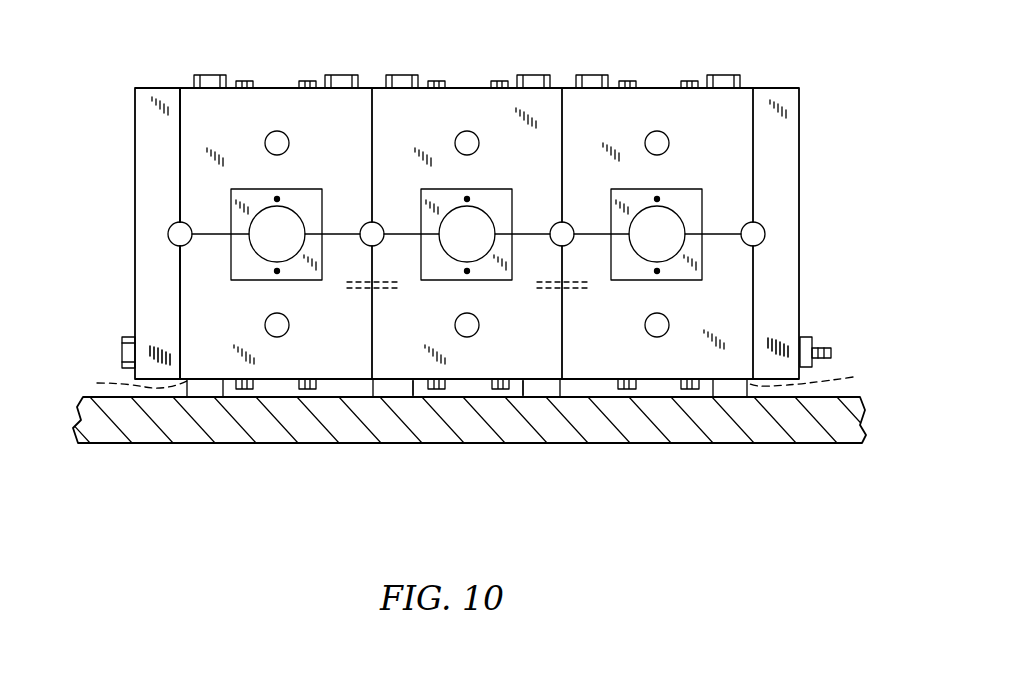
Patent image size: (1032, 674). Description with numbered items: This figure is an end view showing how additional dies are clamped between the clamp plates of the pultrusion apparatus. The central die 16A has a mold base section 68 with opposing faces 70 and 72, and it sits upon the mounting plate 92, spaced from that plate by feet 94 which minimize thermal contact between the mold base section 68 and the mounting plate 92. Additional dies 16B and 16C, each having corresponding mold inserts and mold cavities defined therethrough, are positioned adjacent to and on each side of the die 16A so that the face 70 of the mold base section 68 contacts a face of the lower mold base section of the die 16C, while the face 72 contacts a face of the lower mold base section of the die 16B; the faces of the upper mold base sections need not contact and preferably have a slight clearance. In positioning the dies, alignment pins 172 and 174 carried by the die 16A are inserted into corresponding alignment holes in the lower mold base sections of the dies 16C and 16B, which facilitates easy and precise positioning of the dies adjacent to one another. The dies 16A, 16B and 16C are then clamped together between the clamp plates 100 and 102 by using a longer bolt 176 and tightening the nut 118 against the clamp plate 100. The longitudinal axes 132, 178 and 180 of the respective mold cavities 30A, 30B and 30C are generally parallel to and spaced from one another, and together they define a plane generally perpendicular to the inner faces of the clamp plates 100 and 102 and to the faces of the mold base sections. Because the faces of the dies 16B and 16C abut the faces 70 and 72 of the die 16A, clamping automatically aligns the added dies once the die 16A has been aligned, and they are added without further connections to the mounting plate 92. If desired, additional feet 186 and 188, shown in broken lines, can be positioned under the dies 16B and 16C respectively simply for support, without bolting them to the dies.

The die 16A is at (467, 199).
The die 16B is at (276, 199).
The die 16C is at (657, 199).
The mold cavity 30A is at (466, 242).
The mold cavity 30B is at (276, 242).
The mold cavity 30C is at (655, 242).
The mold base section 68 is at (468, 372).
The face 70 is at (562, 327).
The face 72 is at (372, 327).
The mounting plate 92 is at (705, 432).
The feet 94 is at (397, 388).
The clamp plate 100 is at (790, 175).
The clamp plate 102 is at (147, 176).
The nut 118 is at (812, 338).
The longitudinal axis 132 is at (467, 236).
The alignment pin 172 is at (581, 285).
The alignment pin 174 is at (391, 285).
The bolt 176 is at (122, 350).
The longitudinal axis 178 is at (277, 236).
The longitudinal axis 180 is at (657, 236).
The foot 186 is at (117, 381).
The foot 188 is at (821, 373).